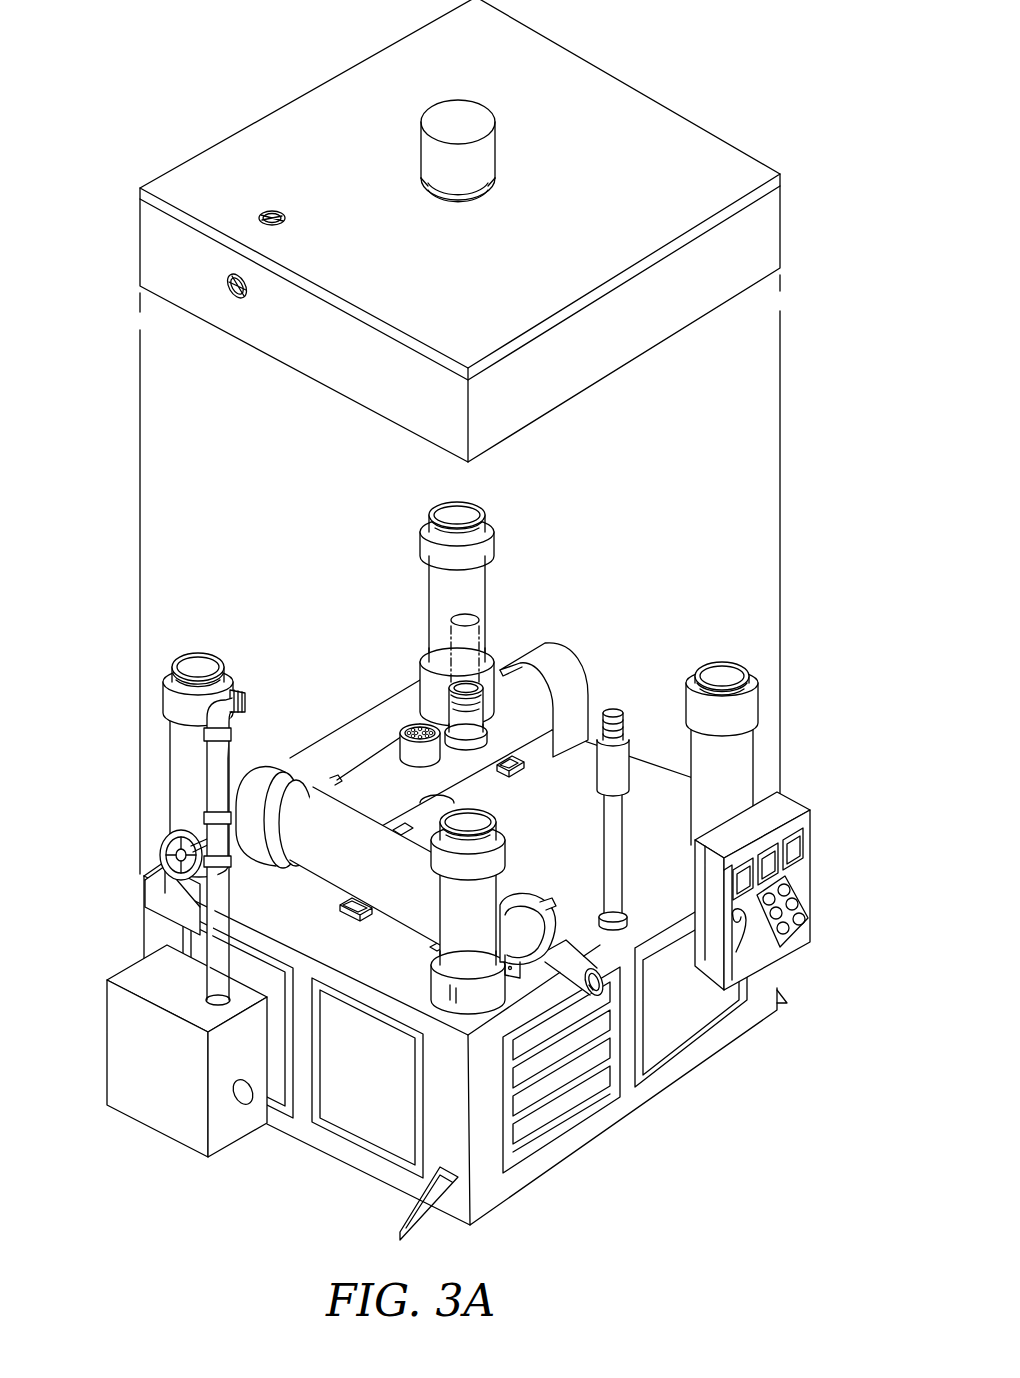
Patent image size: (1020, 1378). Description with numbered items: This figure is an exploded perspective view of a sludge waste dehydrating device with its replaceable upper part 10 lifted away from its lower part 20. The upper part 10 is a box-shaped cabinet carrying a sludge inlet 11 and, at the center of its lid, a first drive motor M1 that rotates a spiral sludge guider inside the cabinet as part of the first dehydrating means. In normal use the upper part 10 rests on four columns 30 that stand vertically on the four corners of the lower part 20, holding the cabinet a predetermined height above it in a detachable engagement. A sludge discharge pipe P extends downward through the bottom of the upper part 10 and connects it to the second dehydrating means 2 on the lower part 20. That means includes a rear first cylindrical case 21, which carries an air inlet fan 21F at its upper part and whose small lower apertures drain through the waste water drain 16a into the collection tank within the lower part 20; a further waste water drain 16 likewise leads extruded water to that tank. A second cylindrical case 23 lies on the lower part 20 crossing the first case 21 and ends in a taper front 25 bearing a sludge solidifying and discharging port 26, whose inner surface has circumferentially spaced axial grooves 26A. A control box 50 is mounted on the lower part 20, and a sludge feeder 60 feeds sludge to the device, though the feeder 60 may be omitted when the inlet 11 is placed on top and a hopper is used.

The replaceable upper part 10 is at (719, 158).
The first drive motor M1 is at (484, 163).
The sludge inlet 11 is at (231, 277).
The lower part 20 is at (648, 1103).
The sludge feeder 60 is at (158, 1108).
The second dehydrating means 2 is at (345, 748).
The second cylindrical case 23 is at (420, 925).
The waste water drain 16a is at (454, 798).
The air inlet fan 21F is at (416, 722).
The first cylindrical case 21 is at (519, 697).
The sludge discharge pipe P is at (488, 632).
The taper front 25 is at (545, 922).
The sludge solidifying and discharging port 26 is at (576, 967).
The axial grooves 26A is at (596, 996).
The waste water drain 16 is at (616, 848).
The columns 30 is at (182, 782).
The control box 50 is at (812, 872).